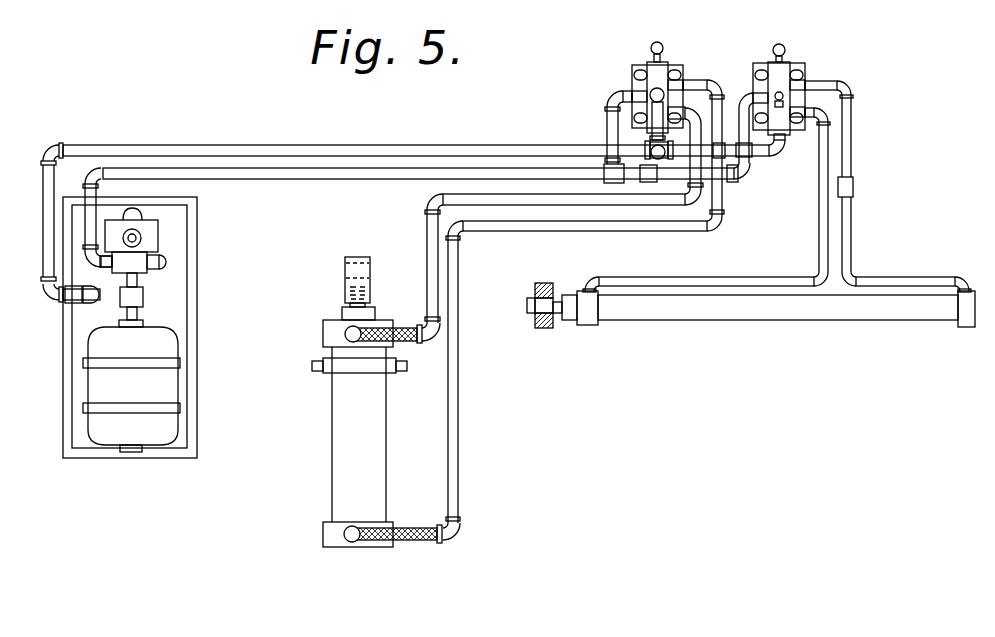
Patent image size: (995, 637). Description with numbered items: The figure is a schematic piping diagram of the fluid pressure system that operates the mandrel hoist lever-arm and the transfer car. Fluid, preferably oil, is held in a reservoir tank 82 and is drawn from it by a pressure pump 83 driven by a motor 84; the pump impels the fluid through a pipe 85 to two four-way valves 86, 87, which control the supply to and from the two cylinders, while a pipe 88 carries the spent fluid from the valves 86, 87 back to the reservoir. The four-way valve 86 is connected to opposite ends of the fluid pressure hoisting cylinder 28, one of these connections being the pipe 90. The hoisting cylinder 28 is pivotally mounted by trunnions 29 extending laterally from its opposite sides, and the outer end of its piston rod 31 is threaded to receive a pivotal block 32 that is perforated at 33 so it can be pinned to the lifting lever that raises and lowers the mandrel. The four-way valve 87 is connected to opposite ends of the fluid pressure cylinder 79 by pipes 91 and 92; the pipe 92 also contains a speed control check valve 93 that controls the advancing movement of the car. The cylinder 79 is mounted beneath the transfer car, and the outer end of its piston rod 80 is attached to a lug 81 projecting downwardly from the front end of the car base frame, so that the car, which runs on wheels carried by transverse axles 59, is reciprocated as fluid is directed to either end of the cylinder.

The fluid pressure hoisting cylinder 28 is at (375, 466).
The trunnions 29 is at (318, 372).
The piston rod 31 is at (345, 304).
The pivotal block 32 is at (343, 256).
The perforation 33 is at (372, 271).
The transverse axles 59 is at (460, 323).
The fluid pressure cylinder 79 is at (755, 320).
The piston rod 80 is at (570, 290).
The lug 81 is at (541, 327).
The reservoir tank 82 is at (78, 332).
The pressure pump 83 is at (150, 241).
The motor 84 is at (163, 388).
The pipe 85 is at (327, 179).
The four-way valve 86 is at (653, 83).
The four-way valve 87 is at (790, 66).
The pipe 88 is at (387, 148).
The pipe 90 is at (546, 212).
The pipe 91 is at (724, 278).
The pipe 92 is at (903, 278).
The speed control check valve 93 is at (853, 187).